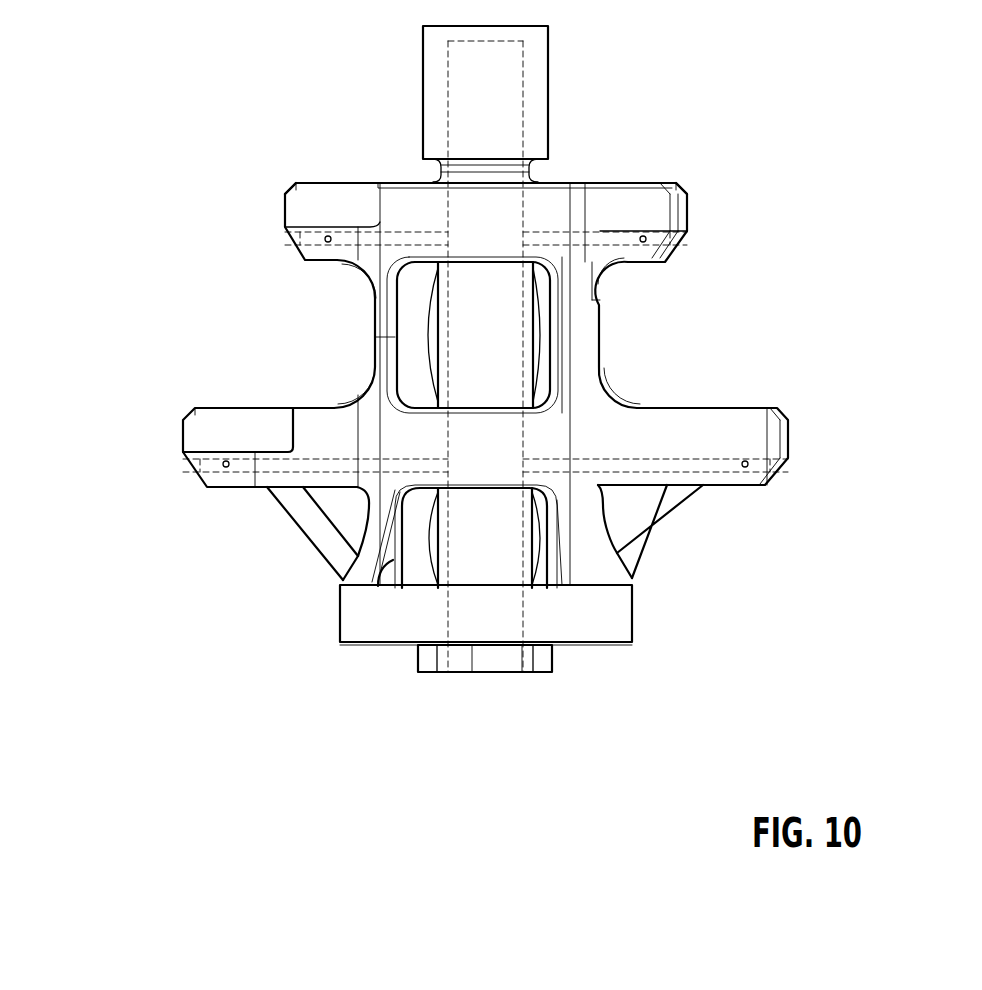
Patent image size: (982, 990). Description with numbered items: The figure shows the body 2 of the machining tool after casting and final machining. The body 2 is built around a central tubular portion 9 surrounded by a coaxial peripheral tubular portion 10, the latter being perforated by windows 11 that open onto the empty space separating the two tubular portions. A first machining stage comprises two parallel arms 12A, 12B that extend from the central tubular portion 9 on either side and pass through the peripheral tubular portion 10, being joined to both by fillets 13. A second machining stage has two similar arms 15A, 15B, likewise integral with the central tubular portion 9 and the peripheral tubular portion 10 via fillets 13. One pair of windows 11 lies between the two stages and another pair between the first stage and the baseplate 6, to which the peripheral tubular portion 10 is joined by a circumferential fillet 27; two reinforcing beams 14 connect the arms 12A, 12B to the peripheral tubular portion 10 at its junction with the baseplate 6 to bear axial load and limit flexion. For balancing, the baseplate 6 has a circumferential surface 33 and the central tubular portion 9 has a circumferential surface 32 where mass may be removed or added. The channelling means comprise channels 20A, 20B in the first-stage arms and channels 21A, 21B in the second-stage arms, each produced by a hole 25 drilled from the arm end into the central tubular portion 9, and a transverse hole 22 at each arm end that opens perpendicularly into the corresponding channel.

The body 2 is at (678, 137).
The circumferential surface 32 is at (540, 93).
The arm 15B is at (308, 207).
The arm 15A is at (655, 212).
The hole 25 is at (268, 239).
The channel 21B is at (392, 234).
The channel 21A is at (540, 235).
The transverse hole 22 is at (328, 244).
The fillets 13 is at (608, 270).
The peripheral tubular portion 10 is at (582, 337).
The central tubular portion 9 is at (462, 358).
The windows 11 is at (390, 337).
The arm 12B is at (262, 415).
The arm 12A is at (690, 422).
The channel 20B is at (373, 465).
The channel 20A is at (590, 465).
The reinforcing beams 14 is at (307, 518).
The circumferential fillet 27 is at (355, 578).
The baseplate 6 is at (620, 610).
The circumferential surface 33 is at (572, 627).